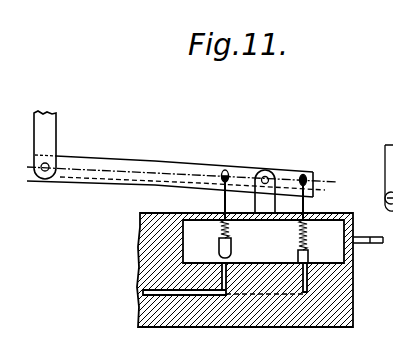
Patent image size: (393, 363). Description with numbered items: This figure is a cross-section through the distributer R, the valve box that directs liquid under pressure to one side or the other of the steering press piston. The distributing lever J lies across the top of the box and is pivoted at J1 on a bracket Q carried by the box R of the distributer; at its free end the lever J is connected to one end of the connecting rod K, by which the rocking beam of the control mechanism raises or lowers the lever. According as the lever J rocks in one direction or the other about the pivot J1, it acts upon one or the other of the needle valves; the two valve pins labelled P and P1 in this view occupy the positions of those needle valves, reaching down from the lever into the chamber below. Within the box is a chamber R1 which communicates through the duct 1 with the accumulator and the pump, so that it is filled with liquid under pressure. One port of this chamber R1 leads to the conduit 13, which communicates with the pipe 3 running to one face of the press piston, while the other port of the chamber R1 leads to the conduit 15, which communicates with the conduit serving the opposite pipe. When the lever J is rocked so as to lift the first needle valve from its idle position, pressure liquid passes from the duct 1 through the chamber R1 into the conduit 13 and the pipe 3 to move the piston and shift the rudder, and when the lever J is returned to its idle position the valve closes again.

The connecting rod K is at (52, 135).
The distributing lever J is at (153, 167).
The pivot J1 is at (266, 171).
The bracket Q is at (258, 205).
The connecting rod P is at (218, 207).
The pin P1 is at (298, 256).
The distributer R is at (328, 310).
The chamber R1 is at (328, 233).
The duct 1 is at (371, 243).
The pipe 3 is at (176, 295).
The conduit 13 is at (163, 294).
The conduit 15 is at (267, 295).